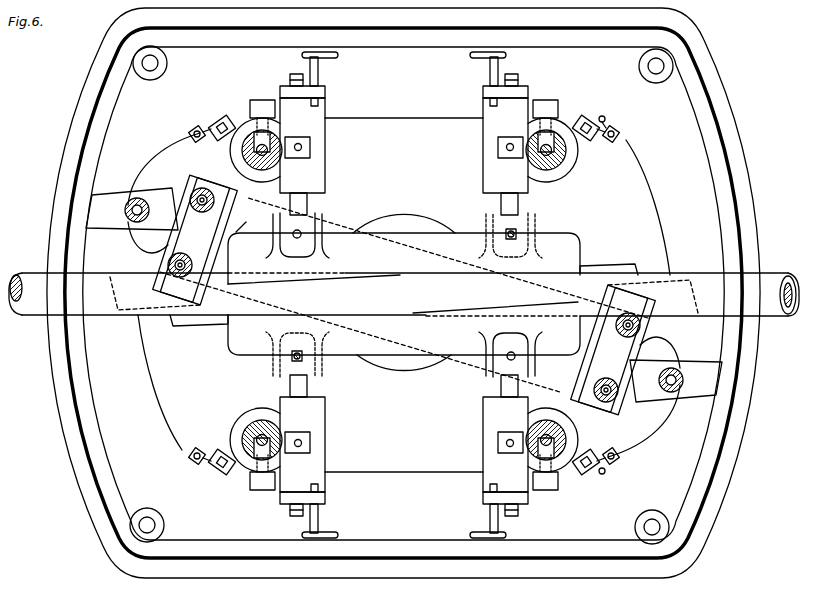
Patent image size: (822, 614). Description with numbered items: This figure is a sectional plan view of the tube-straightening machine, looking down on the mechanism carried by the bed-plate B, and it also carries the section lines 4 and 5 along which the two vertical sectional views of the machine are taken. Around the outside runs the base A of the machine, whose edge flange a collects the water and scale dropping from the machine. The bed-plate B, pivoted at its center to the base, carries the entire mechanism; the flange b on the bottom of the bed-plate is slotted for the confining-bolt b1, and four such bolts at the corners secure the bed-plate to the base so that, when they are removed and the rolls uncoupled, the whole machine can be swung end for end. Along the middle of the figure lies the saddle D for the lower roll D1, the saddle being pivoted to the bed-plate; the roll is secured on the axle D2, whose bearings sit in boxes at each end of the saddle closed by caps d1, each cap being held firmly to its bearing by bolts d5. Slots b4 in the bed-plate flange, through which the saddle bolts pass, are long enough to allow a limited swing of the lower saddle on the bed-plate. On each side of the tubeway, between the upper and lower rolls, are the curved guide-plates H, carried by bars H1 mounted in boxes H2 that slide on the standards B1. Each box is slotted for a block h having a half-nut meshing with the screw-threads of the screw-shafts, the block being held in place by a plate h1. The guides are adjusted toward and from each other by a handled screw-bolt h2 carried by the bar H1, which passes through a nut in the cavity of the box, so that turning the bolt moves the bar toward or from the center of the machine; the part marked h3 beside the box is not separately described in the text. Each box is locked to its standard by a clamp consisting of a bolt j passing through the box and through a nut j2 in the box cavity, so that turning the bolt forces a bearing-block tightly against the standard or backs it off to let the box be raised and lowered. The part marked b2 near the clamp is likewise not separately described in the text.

The flange a is at (403, 294).
The section line 4- 4 is at (752, 392).
The section line 5- 5 is at (260, 613).
The base A is at (410, 303).
The bed-plate B is at (422, 453).
The guide-plates H is at (404, 295).
The bars H1 is at (309, 207).
The boxes H2 is at (302, 139).
The blocks h is at (252, 107).
The plates h1 is at (263, 109).
The handled screw-bolt h2 is at (320, 78).
The lug h3 is at (326, 148).
The standards B1 is at (232, 157).
The flange b is at (190, 131).
The confining-bolt b1 is at (618, 130).
The clamp block b2 is at (213, 122).
The slots b4 is at (145, 198).
The bolt j is at (602, 116).
The nut j2 is at (196, 142).
The saddle D is at (406, 372).
The lower roll D1 is at (249, 223).
The axle D2 is at (132, 209).
The caps d1 is at (195, 250).
The bolts d5 is at (191, 232).